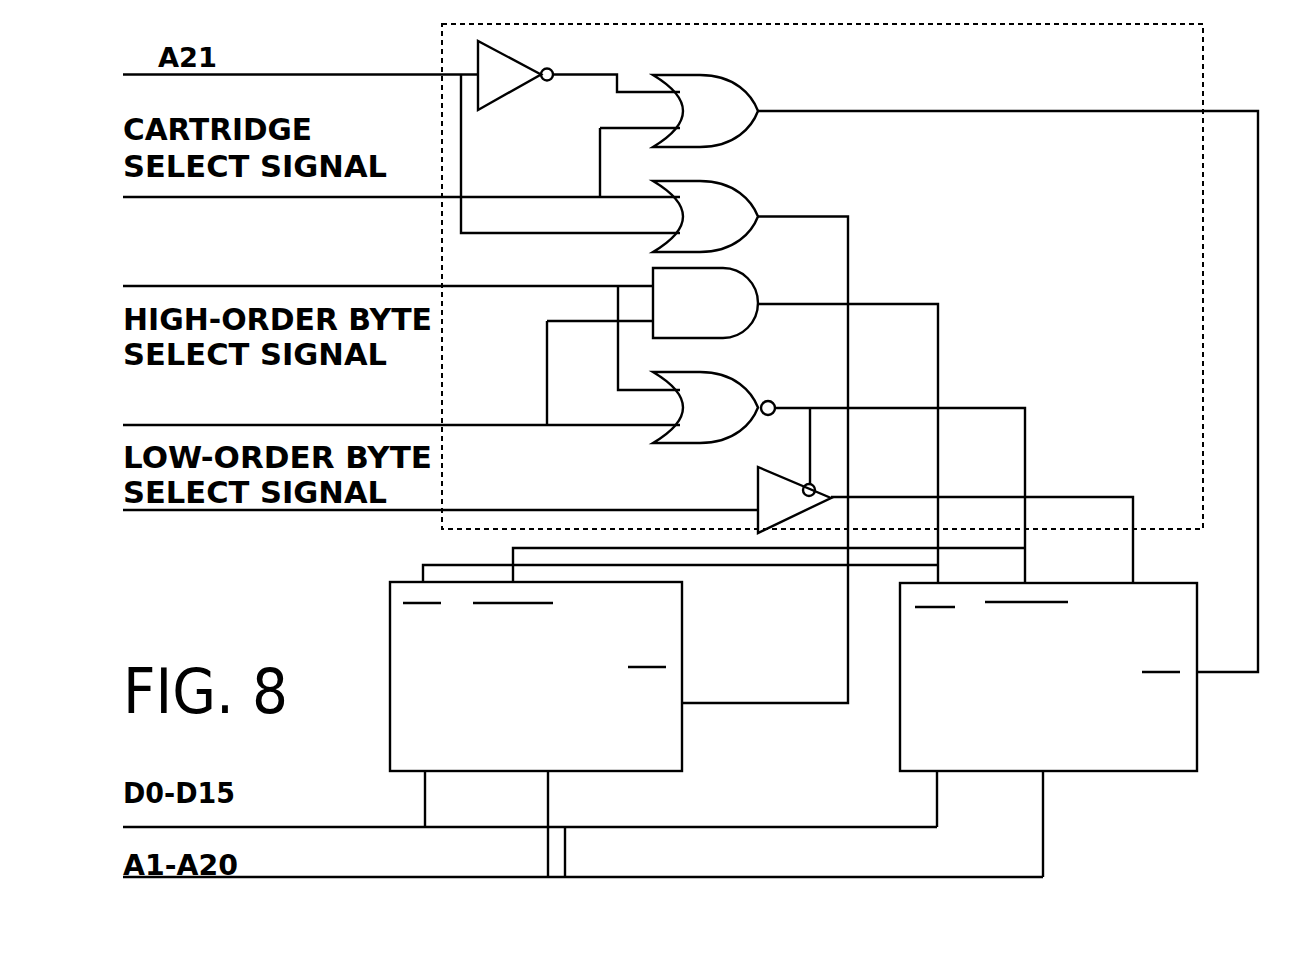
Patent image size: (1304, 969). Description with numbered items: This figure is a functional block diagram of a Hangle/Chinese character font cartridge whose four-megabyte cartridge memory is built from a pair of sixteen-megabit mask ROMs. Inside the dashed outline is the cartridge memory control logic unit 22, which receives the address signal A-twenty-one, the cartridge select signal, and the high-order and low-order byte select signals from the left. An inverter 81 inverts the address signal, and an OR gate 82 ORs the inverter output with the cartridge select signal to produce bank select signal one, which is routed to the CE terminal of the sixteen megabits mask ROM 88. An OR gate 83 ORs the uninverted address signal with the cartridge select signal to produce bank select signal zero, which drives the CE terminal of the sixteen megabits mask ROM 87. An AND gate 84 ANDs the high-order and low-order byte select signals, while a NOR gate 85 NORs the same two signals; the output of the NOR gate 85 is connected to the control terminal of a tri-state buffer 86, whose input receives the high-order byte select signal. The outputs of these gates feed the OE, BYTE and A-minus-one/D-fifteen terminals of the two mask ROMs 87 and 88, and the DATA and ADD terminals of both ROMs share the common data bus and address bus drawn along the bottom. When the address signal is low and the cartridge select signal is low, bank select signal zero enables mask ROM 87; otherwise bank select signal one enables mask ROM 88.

The cartridge memory control logic unit 22 is at (1203, 94).
The inverter 81 is at (530, 92).
The OR gate 82 is at (778, 62).
The OR gate 83 is at (740, 193).
The AND gate 84 is at (758, 282).
The NOR gate 85 is at (758, 397).
The tri-state buffer 86 is at (758, 492).
The sixteen megabits mask ROM 87 is at (389, 722).
The sixteen megabits mask ROM 88 is at (900, 757).